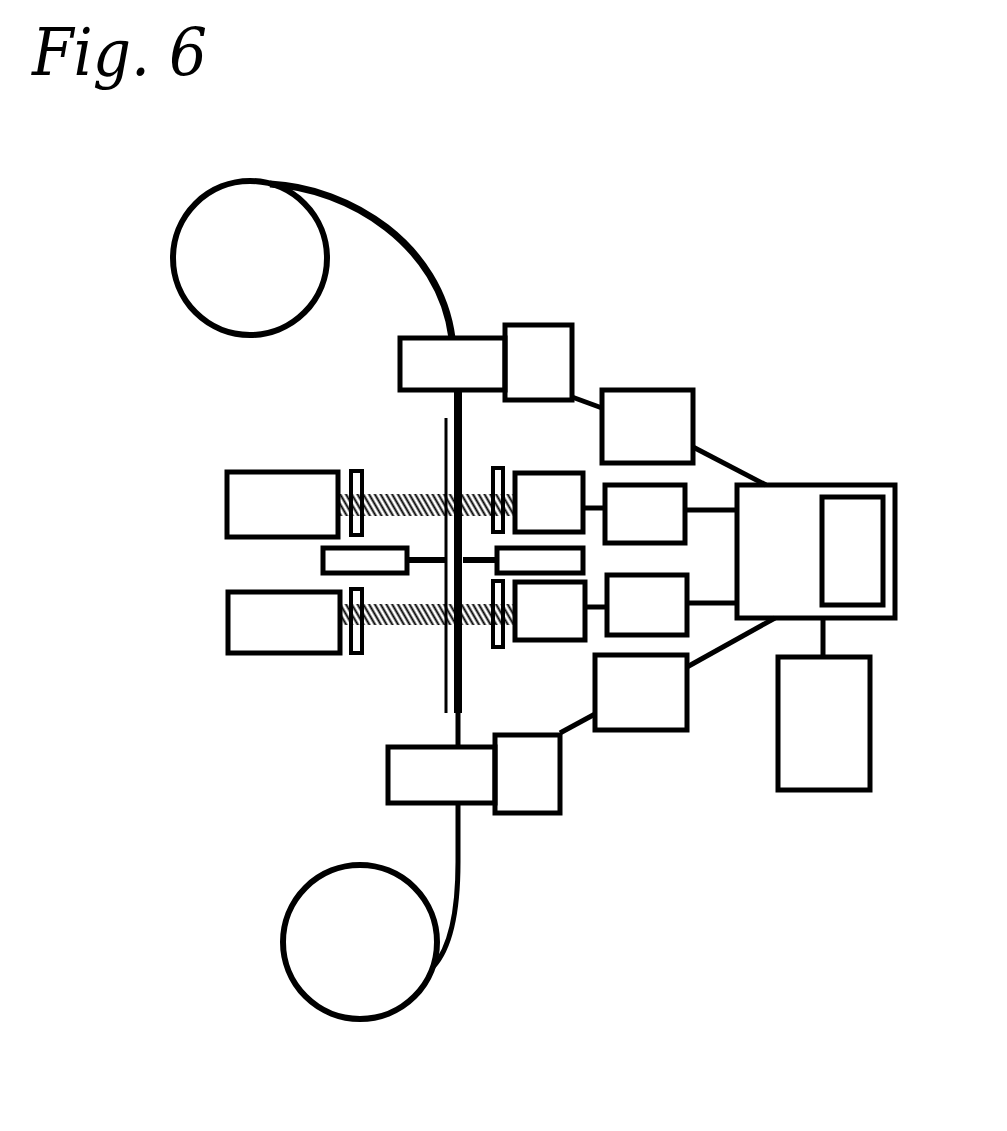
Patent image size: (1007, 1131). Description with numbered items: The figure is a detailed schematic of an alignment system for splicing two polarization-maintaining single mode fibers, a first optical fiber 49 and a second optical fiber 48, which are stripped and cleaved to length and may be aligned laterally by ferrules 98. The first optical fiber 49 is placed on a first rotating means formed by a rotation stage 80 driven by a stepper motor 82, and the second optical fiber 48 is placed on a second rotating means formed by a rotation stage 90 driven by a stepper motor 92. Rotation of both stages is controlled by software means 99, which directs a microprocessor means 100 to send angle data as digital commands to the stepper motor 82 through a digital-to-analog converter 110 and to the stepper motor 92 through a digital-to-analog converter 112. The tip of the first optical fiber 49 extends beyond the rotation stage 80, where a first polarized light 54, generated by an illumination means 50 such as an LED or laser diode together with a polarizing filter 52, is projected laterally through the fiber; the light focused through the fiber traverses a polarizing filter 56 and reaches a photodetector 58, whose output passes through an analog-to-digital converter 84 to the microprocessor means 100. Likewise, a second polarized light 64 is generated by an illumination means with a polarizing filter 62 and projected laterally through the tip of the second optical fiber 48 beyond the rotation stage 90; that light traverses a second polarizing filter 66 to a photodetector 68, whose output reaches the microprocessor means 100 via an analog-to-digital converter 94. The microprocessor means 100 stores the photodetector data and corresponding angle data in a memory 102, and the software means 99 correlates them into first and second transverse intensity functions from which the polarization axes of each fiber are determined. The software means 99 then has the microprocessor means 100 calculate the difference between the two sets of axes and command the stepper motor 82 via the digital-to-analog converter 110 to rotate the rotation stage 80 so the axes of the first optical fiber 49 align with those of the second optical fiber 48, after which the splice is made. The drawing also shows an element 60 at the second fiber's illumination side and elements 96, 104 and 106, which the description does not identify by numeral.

The second optical fiber 48 is at (458, 866).
The first optical fiber 49 is at (434, 268).
The illumination means 50 is at (258, 525).
The polarizing filter 52 is at (356, 471).
The first polarized light 54 is at (405, 497).
The polarizing filter 56 is at (498, 468).
The photodetector 58 is at (525, 523).
The second light source 60 is at (260, 643).
The polarizing filter 62 is at (356, 654).
The second polarized light 64 is at (400, 626).
The second polarizing filter 66 is at (498, 648).
The photodetector 68 is at (526, 631).
The rotation stage 80 is at (428, 384).
The stepper motor 82 is at (514, 385).
The analog-to-digital converter 84 is at (621, 534).
The rotation stage 90 is at (417, 797).
The stepper motor 92 is at (503, 792).
The analog-to-digital converter 94 is at (623, 625).
The web edge guide 96 is at (323, 561).
The ferrules 98 is at (446, 446).
The software means 99 is at (828, 573).
The microprocessor means 100 is at (742, 575).
The memory 102 is at (789, 747).
The supply roll 104 is at (216, 280).
The take-up roll 106 is at (326, 970).
The digital-to-analog converter 110 is at (611, 448).
The digital-to-analog converter 112 is at (605, 713).